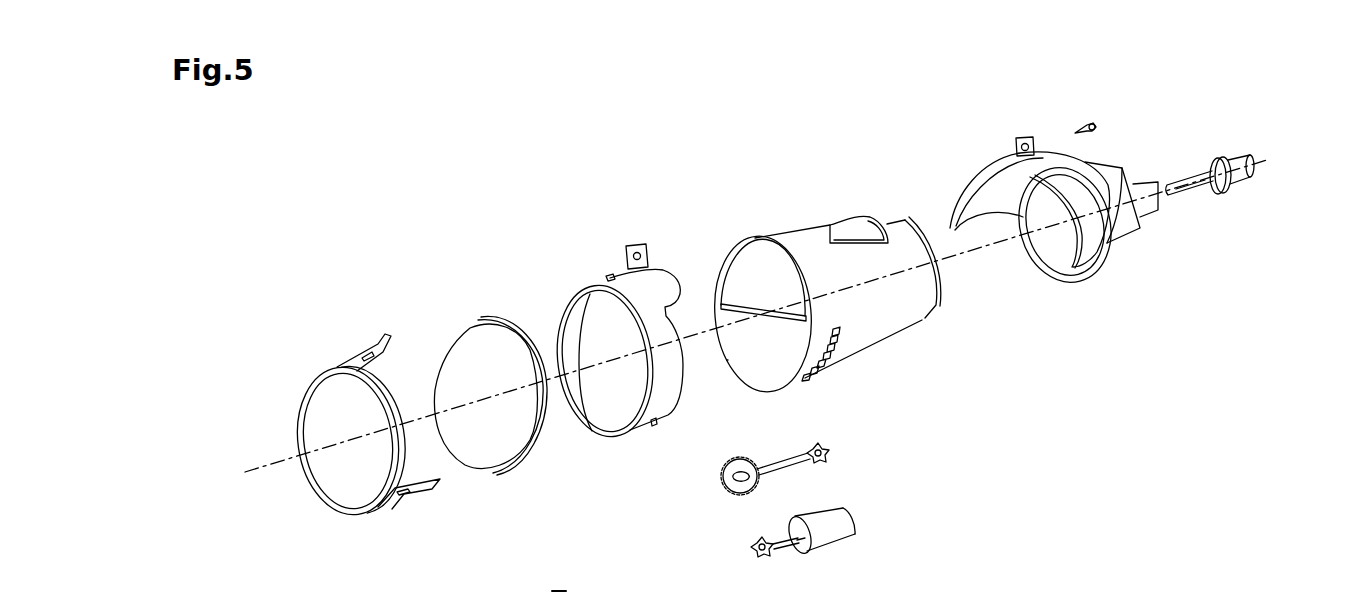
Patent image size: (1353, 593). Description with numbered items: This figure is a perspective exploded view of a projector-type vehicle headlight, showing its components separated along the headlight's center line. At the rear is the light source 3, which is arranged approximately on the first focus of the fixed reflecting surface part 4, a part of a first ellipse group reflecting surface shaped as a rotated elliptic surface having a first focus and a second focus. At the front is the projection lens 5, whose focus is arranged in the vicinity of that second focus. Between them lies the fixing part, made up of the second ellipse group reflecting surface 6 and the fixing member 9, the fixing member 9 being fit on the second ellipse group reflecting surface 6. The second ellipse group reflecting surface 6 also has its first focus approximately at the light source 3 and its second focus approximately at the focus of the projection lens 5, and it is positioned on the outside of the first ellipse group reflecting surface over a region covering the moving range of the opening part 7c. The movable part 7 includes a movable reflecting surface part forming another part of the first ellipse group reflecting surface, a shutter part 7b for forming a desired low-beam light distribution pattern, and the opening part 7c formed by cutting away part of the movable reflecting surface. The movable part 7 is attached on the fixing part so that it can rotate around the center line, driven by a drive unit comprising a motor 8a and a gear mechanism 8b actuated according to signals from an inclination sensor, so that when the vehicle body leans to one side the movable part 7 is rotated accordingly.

The light source 3 is at (1243, 160).
The fixed reflecting surface part 4 is at (1125, 220).
The projection lens 5 is at (477, 372).
The second ellipse group reflecting surface 6 is at (1012, 175).
The movable part 7 is at (818, 296).
The shutter part 7b is at (748, 350).
The opening part 7c is at (861, 229).
The motor 8a is at (867, 520).
The gear mechanism 8b is at (848, 451).
The fixing member 9 is at (655, 288).